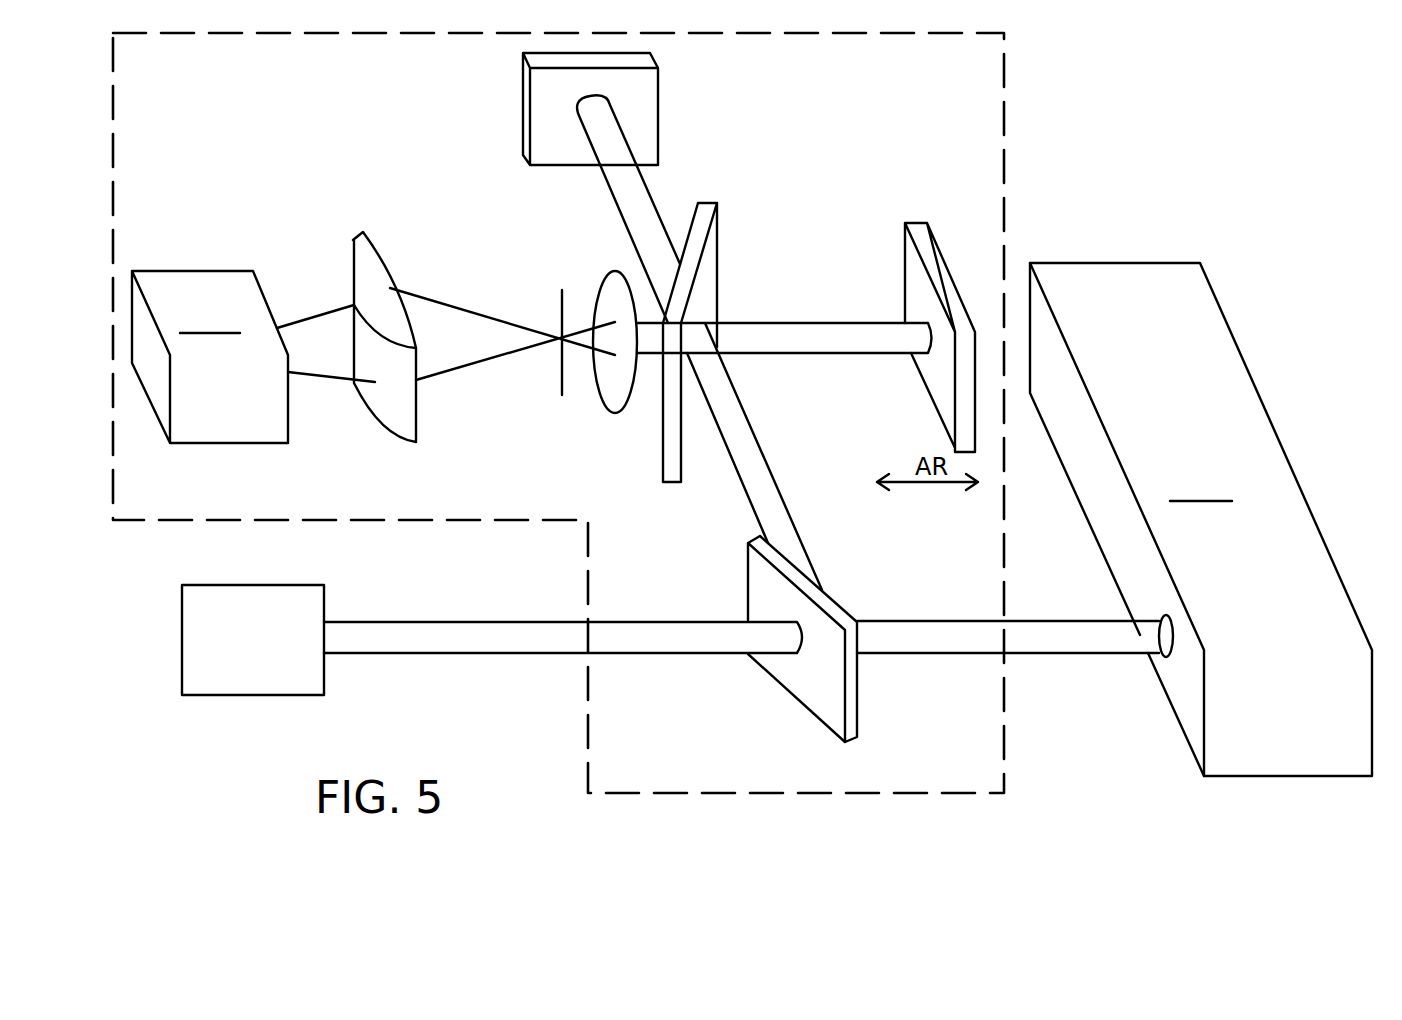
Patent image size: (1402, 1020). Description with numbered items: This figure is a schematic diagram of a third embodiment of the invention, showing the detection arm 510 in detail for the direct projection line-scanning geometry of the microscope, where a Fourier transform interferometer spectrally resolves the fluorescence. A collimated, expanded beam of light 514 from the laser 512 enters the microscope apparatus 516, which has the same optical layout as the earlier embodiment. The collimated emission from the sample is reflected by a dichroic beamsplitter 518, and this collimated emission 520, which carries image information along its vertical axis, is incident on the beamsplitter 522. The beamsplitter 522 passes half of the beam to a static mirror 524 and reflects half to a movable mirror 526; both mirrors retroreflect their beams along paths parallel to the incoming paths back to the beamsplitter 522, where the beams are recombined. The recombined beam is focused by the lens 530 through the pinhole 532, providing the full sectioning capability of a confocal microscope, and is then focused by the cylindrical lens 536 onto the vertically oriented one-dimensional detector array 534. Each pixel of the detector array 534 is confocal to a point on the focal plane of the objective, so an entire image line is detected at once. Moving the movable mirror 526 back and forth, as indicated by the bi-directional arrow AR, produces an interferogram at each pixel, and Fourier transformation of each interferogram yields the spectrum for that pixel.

The detection arm 510 is at (1003, 158).
The laser 512 is at (267, 677).
The beam of light 514 is at (463, 655).
The microscope apparatus 516 is at (1201, 519).
The dichroic beamsplitter 518 is at (833, 692).
The collimated emission 520 is at (803, 542).
The beamsplitter 522 is at (720, 243).
The static mirror 524 is at (640, 117).
The movable mirror 526 is at (905, 258).
The lens 530 is at (598, 390).
The pinhole 532 is at (560, 312).
The one-dimensional detector array 534 is at (253, 357).
The cylindrical lens 536 is at (357, 242).